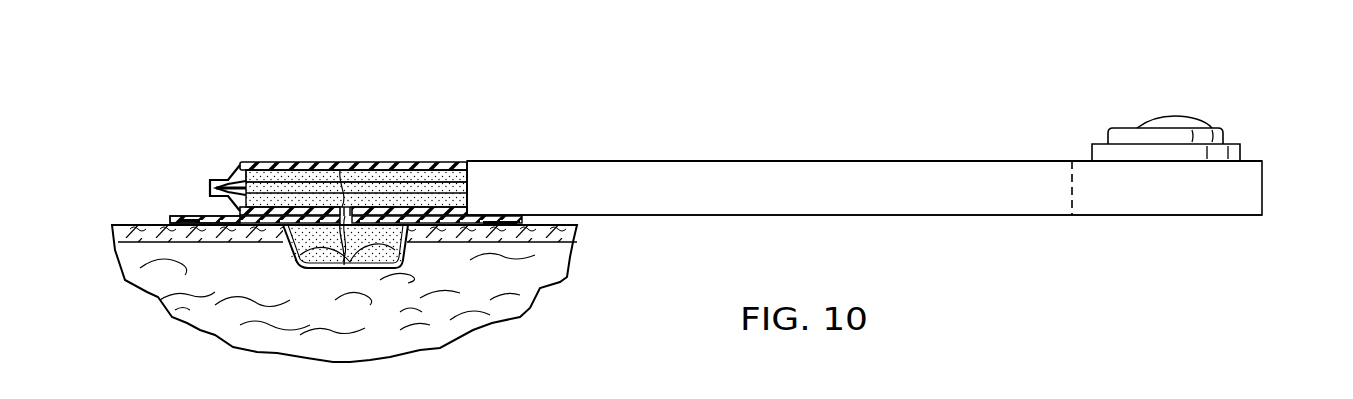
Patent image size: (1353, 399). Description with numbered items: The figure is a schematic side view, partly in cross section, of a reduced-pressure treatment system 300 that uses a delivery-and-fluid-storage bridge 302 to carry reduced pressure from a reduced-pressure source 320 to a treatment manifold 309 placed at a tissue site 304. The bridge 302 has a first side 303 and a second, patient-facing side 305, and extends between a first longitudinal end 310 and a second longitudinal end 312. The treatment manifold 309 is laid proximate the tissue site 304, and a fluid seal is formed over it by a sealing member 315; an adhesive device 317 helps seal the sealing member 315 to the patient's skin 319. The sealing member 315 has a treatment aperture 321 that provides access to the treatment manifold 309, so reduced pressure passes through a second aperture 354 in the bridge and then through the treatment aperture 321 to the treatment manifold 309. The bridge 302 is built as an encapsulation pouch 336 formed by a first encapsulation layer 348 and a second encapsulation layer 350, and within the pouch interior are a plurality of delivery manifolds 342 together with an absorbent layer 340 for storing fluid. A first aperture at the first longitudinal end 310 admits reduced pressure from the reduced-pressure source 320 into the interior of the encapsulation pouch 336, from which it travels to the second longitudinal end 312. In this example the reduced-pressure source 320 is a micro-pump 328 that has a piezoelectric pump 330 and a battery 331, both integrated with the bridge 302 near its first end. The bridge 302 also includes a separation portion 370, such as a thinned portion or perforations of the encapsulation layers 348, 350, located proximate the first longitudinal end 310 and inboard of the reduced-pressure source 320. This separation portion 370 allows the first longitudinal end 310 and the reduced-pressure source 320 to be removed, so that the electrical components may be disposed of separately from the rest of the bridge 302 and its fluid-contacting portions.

The reduced-pressure treatment system 300 is at (389, 144).
The delivery-and-fluid-storage bridge 302 is at (752, 160).
The first side 303 is at (835, 160).
The tissue site 304 is at (398, 257).
The second, patient-facing side 305 is at (900, 216).
The treatment manifold 309 is at (333, 276).
The first longitudinal end 310 is at (1263, 186).
The second longitudinal end 312 is at (250, 161).
The sealing member 315 is at (180, 218).
The adhesive device 317 is at (170, 221).
The patient's skin 319 is at (555, 221).
The reduced-pressure source 320 is at (1201, 98).
The treatment aperture 321 is at (327, 262).
The micro-pump 328 is at (1125, 128).
The piezoelectric pump 330 is at (1242, 152).
The battery 331 is at (1227, 133).
The encapsulation pouch 336 is at (578, 160).
The absorbent layer 340 is at (470, 185).
The delivery manifolds 342 is at (410, 163).
The first encapsulation layer 348 is at (285, 162).
The second encapsulation layer 350 is at (214, 198).
The second aperture 354 is at (340, 170).
The separation portion 370 is at (1068, 185).